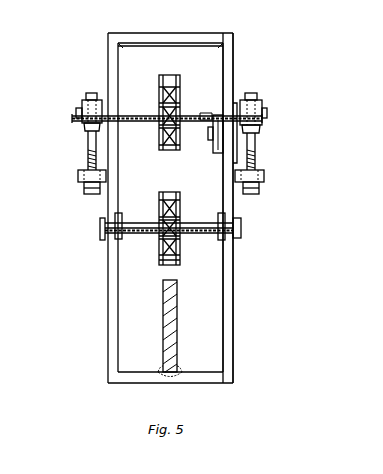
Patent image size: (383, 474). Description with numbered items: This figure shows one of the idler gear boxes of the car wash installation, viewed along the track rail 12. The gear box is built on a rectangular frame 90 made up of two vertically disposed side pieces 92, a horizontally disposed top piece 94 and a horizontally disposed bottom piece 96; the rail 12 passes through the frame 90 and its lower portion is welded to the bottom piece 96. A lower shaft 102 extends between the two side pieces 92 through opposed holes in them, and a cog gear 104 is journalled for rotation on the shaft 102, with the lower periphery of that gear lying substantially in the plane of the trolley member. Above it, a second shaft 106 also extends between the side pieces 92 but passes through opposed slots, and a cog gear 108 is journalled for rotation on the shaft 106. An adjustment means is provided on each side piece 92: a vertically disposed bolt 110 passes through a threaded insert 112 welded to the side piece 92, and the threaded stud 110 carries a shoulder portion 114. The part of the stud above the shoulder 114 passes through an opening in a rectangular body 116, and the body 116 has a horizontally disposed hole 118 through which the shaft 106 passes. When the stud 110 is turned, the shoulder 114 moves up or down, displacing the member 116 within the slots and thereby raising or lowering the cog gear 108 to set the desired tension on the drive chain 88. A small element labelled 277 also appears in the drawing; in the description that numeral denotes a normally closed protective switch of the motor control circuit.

The track rail 12 is at (178, 311).
The drive chain 88 is at (160, 86).
The rectangular frame 90 is at (229, 232).
The side piece 92 is at (108, 47).
The top piece 94 is at (108, 32).
The bottom piece 96 is at (118, 384).
The shaft 102 is at (100, 229).
The cog gear 104 is at (178, 201).
The shaft 106 is at (138, 121).
The cog gear 108 is at (174, 96).
The bolt 110 is at (84, 187).
The threaded insert 112 is at (78, 172).
The shoulder portion 114 is at (86, 131).
The rectangular body 116 is at (83, 120).
The horizontally disposed hole 118 is at (86, 101).
The switch 277 is at (211, 138).